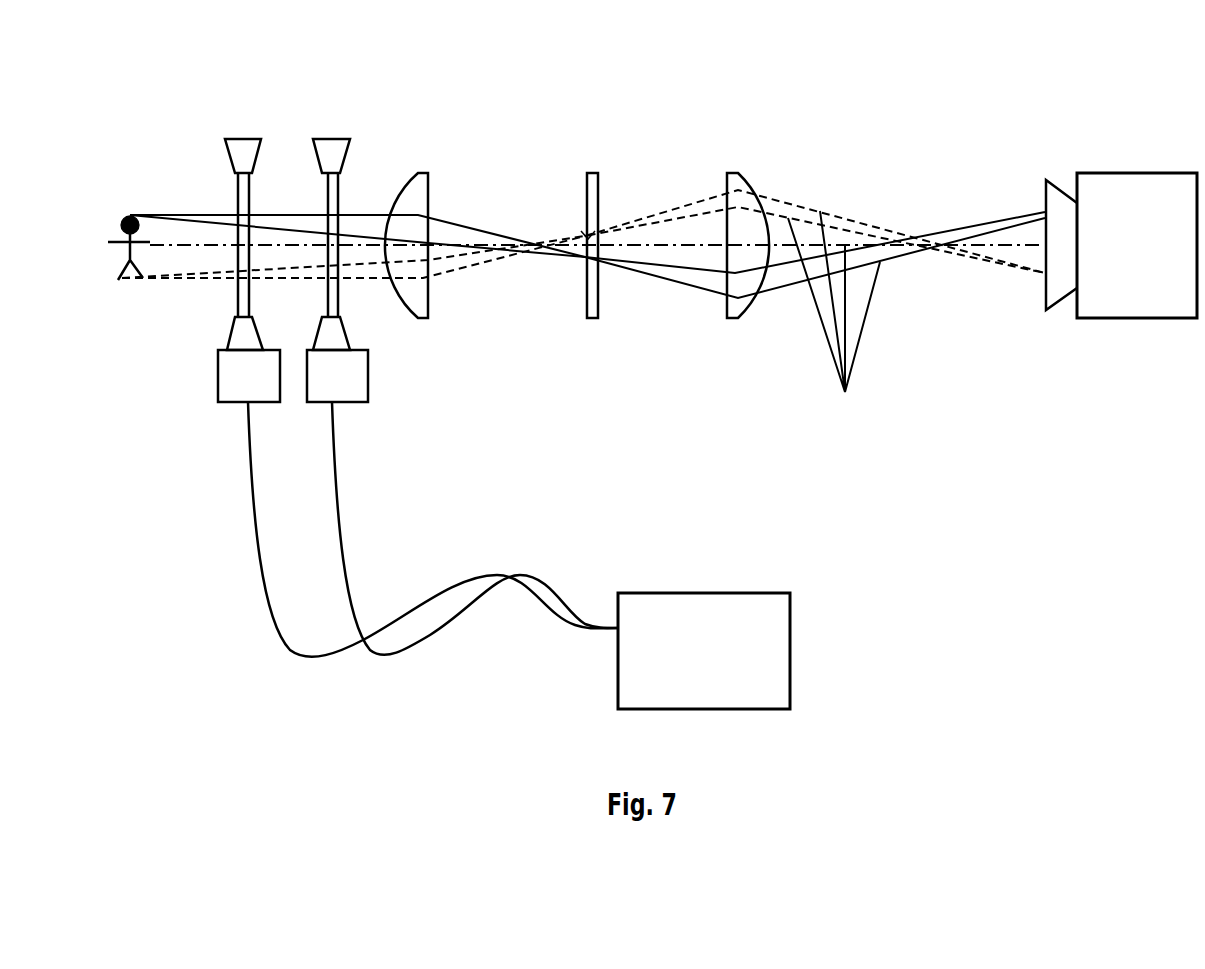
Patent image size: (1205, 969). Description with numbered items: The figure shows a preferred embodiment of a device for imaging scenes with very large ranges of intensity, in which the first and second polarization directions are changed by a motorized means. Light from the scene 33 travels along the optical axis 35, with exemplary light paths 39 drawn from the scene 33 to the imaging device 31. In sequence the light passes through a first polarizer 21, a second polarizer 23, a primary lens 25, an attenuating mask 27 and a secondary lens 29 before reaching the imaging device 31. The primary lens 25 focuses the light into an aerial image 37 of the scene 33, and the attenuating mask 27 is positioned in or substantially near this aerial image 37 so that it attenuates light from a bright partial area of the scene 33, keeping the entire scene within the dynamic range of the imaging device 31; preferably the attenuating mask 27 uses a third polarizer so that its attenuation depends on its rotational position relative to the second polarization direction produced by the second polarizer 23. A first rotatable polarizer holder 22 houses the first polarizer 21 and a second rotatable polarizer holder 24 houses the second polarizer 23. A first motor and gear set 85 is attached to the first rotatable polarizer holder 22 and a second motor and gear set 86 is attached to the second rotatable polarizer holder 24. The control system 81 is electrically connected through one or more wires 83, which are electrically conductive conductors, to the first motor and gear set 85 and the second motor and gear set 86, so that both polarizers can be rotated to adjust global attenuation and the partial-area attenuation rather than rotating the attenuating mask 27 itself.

The first polarizer 21 is at (248, 203).
The first rotatable polarizer holder 22 is at (231, 340).
The second polarizer 23 is at (338, 203).
The second rotatable polarizer holder 24 is at (420, 362).
The primary lens 25 is at (420, 173).
The attenuating mask 27 is at (593, 173).
The secondary lens 29 is at (742, 180).
The imaging device 31 is at (1135, 172).
The scene 33 is at (123, 262).
The optical axis 35 is at (655, 247).
The aerial image 37 is at (580, 257).
The light paths 39 is at (834, 318).
The control system 81 is at (790, 650).
The wires 83 is at (368, 705).
The first motor and gear set 85 is at (217, 377).
The second motor and gear set 86 is at (370, 400).